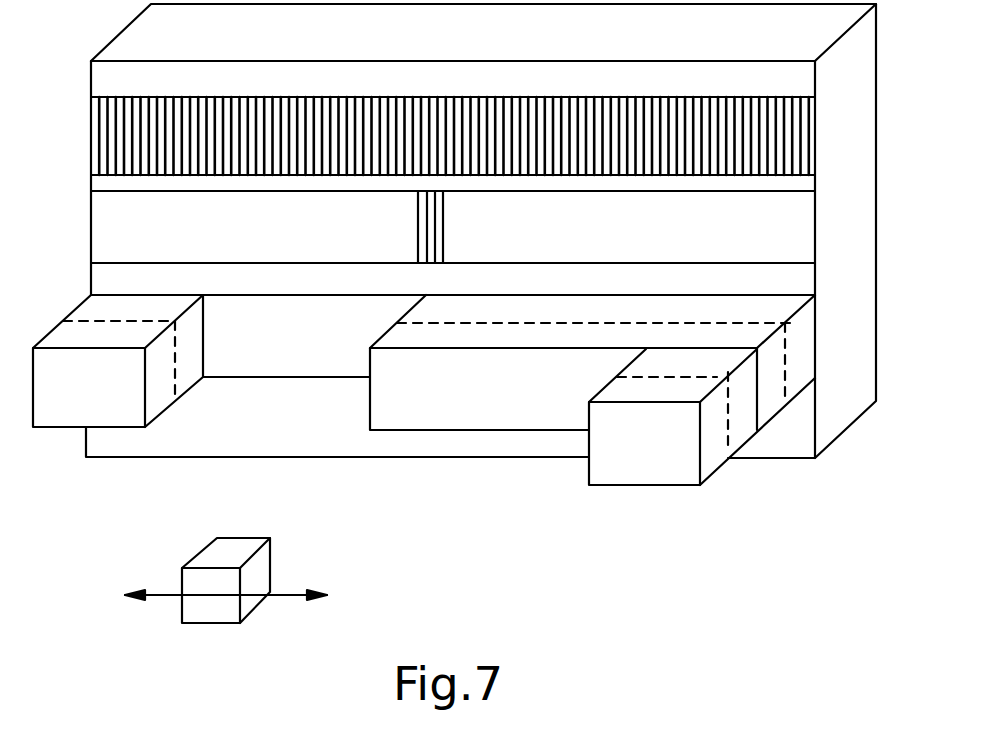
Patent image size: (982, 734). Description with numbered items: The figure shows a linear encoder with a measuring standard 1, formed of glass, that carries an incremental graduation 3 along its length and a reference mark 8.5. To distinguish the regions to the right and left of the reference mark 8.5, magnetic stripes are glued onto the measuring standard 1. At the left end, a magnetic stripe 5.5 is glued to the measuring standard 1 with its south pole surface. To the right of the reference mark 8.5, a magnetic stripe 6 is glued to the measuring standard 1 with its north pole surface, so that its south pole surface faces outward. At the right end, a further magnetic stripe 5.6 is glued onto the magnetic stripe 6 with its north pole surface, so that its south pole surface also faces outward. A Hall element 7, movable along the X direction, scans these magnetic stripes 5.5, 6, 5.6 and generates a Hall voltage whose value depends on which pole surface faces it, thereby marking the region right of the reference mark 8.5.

The measuring standard 1 is at (850, 405).
The incremental graduation 3 is at (103, 137).
The reference mark 8.5 is at (437, 215).
The magnetic stripe 5.5 is at (66, 423).
The magnetic stripe 5.6 is at (627, 482).
The magnetic stripe 6 is at (505, 427).
The Hall element 7 is at (265, 571).